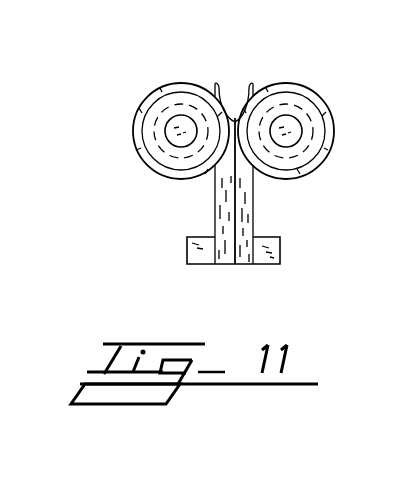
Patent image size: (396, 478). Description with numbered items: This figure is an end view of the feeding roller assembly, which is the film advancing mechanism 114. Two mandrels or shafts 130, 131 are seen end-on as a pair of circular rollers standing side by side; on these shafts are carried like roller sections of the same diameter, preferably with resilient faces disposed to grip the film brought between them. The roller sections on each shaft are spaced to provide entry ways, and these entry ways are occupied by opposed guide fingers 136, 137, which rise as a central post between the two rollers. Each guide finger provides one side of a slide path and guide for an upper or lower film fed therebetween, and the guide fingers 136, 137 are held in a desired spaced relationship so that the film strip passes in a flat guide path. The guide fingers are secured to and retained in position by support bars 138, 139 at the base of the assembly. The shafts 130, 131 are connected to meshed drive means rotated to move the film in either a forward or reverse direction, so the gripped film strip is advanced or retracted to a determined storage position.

The film advancing mechanism 114 is at (118, 62).
The mandrel or shaft 130 is at (182, 115).
The mandrel or shaft 131 is at (297, 120).
The guide finger 136 is at (221, 214).
The guide finger 137 is at (250, 210).
The support bar 138 is at (187, 250).
The support bar 139 is at (280, 257).